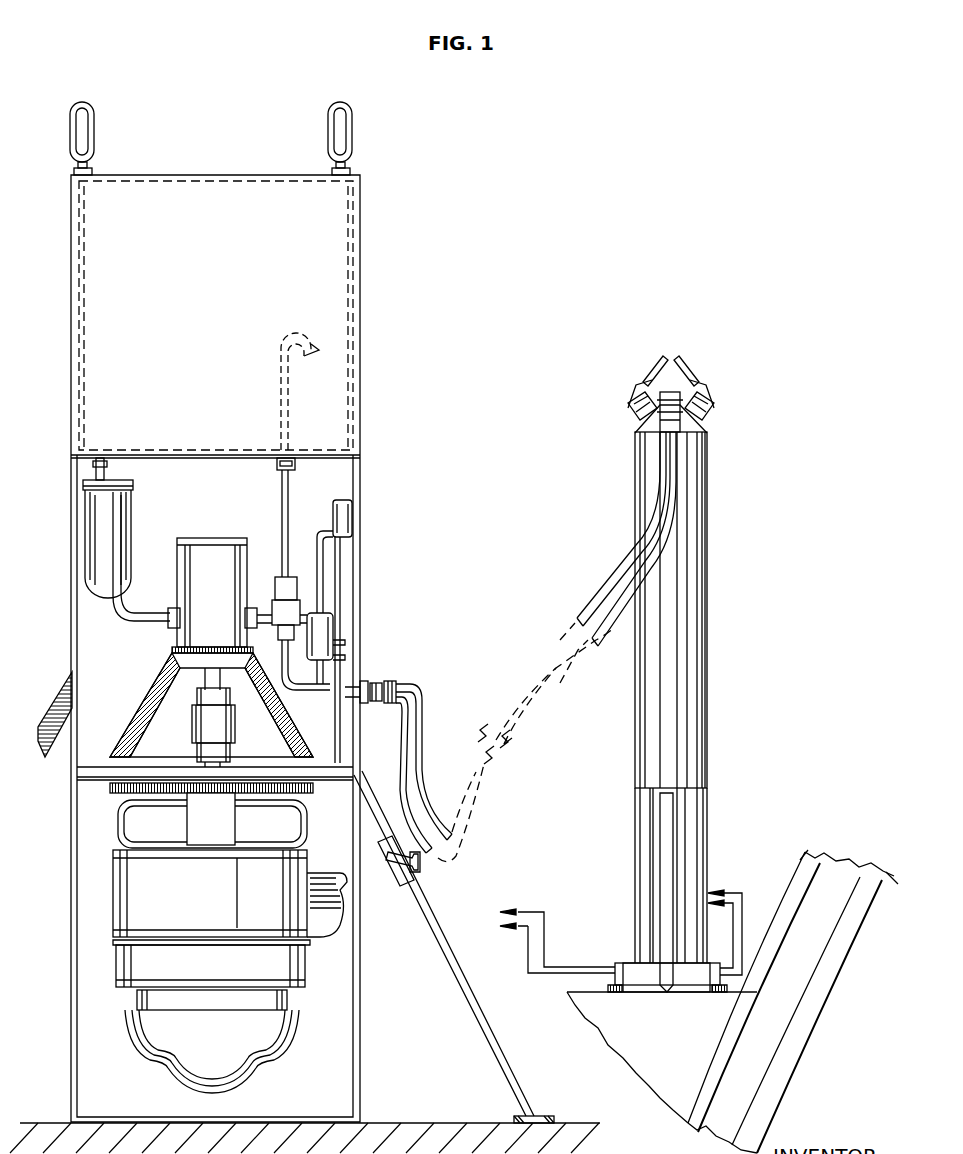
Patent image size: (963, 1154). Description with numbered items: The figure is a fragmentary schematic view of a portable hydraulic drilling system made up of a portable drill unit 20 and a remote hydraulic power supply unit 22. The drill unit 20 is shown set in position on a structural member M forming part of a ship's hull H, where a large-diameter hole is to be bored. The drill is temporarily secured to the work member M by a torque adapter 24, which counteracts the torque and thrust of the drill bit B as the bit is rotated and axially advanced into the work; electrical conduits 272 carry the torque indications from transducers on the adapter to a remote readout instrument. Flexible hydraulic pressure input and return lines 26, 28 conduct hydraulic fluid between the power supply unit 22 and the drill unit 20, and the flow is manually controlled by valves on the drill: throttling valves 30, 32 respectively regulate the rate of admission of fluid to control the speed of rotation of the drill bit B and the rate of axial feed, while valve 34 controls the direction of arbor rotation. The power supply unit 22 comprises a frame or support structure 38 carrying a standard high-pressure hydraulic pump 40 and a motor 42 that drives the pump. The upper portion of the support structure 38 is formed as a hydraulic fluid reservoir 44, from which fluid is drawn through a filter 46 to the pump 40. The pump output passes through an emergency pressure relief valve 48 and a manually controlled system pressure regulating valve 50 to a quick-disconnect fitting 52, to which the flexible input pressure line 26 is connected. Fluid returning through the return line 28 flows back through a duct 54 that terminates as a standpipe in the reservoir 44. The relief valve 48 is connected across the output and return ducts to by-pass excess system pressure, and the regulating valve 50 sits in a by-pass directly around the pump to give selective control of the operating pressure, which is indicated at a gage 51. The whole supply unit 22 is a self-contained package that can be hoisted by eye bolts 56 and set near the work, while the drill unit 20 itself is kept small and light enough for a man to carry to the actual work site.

The portable drill unit 20 is at (708, 614).
The hydraulic power supply unit 22 is at (362, 476).
The torque adapter 24 is at (628, 963).
The flexible hydraulic pressure input line 26 is at (418, 706).
The flexible hydraulic pressure return line 28 is at (392, 744).
The throttling valve 30 is at (683, 392).
The throttling valve 32 is at (657, 390).
The direction control valve 34 is at (626, 418).
The frame or support structure 38 is at (360, 978).
The high pressure hydraulic pump 40 is at (226, 585).
The motor 42 is at (231, 900).
The hydraulic fluid reservoir 44 is at (224, 251).
The filter 46 is at (133, 520).
The emergency pressure relief valve 48 is at (283, 608).
The system pressure regulating valve 50 is at (322, 630).
The gage 51 is at (352, 516).
The quick-disconnect fitting 52 is at (380, 682).
The duct 54 is at (282, 500).
The eye bolts 56 is at (94, 113).
The electrical conduits 272 is at (500, 926).
The drill bit B is at (670, 838).
The ship's hull H is at (800, 902).
The structural member M is at (675, 1038).